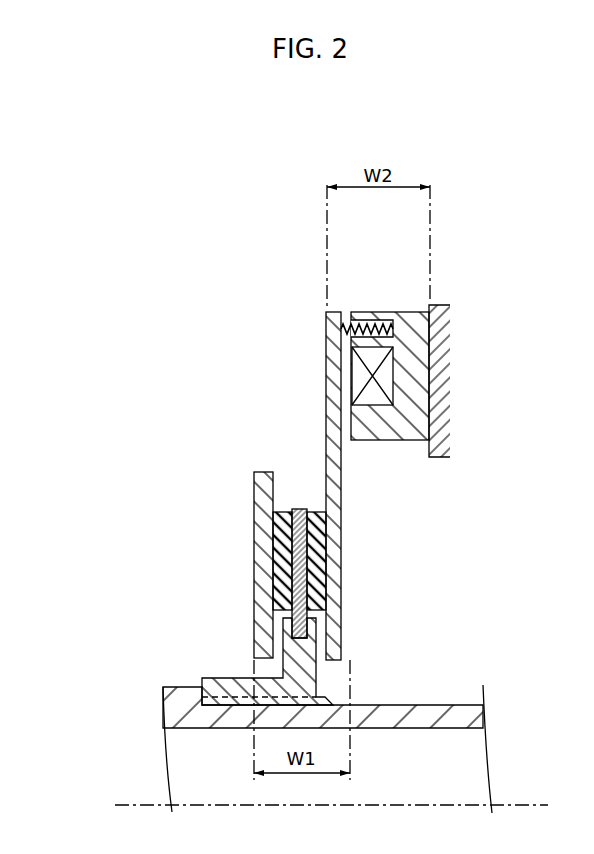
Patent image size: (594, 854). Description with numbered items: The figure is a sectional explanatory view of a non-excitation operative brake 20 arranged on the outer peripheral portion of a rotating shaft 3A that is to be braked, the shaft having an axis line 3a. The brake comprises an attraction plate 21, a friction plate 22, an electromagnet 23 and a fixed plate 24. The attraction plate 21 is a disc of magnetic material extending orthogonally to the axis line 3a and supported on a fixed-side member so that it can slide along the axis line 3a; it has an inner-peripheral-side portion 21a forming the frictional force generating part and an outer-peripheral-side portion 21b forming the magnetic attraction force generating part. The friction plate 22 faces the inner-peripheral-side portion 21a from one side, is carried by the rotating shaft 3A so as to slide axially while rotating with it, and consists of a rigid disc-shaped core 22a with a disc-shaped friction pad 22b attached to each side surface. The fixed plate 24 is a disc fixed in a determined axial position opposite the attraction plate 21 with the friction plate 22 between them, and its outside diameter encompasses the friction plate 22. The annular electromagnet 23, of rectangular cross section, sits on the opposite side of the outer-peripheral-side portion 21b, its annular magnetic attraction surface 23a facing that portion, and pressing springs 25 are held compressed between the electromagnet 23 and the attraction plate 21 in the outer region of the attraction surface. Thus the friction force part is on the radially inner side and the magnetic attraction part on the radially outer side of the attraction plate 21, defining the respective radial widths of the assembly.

The non-excitation operative brake 20 is at (299, 466).
The attraction plate 21 is at (332, 444).
The inner-peripheral-side portion 21a is at (352, 463).
The outer-peripheral-side portion 21b is at (317, 307).
The friction plate 22 is at (233, 570).
The core 22a is at (292, 535).
The friction pad 22b is at (310, 565).
The electromagnet 23 is at (401, 343).
The magnetic attraction surface 23a is at (345, 314).
The fixed plate 24 is at (252, 590).
The pressing spring 25 is at (368, 318).
The rotating shaft 3A is at (176, 686).
The axis line 3a is at (124, 804).